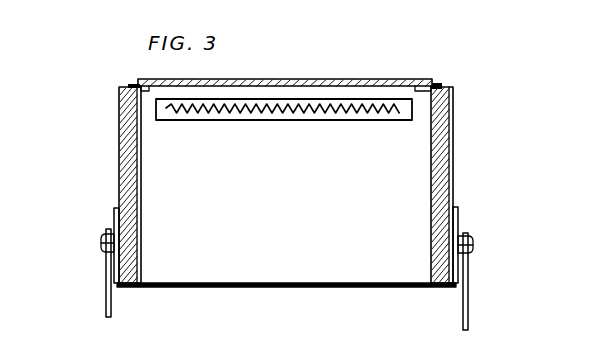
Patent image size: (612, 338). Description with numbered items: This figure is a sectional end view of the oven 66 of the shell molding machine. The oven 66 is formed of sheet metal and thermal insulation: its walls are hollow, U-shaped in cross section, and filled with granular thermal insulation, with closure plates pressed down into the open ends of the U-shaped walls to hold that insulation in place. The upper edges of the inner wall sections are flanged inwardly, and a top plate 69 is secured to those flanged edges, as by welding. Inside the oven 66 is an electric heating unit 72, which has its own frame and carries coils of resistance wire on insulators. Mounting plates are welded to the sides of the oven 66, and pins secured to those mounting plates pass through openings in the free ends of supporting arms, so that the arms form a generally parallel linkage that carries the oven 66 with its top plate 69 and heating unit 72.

The oven 66 is at (277, 268).
The top plate 69 is at (329, 78).
The electric heating unit 72 is at (293, 122).